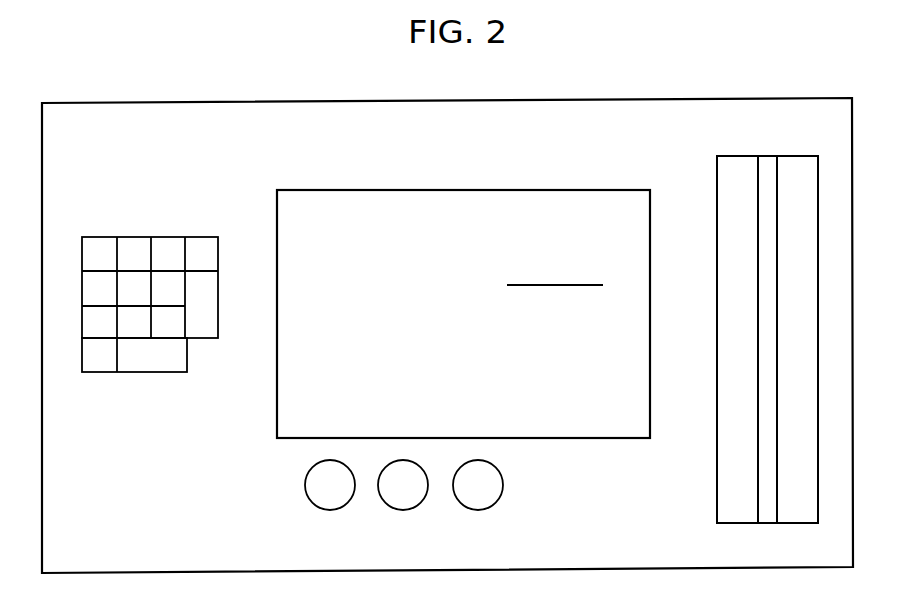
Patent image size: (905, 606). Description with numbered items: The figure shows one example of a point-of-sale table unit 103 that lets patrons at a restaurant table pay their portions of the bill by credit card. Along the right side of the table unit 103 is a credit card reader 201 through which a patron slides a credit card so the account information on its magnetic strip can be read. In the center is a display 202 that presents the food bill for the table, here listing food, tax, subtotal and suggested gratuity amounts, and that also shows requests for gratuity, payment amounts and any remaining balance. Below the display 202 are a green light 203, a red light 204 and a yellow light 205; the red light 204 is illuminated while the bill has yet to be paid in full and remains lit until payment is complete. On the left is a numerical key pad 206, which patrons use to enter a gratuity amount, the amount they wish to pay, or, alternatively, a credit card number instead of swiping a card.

The table unit 103 is at (703, 97).
The credit card reader 201 is at (792, 155).
The display 202 is at (452, 189).
The green light 203 is at (348, 502).
The red light 204 is at (423, 500).
The yellow light 205 is at (497, 500).
The numerical key pad 206 is at (140, 235).